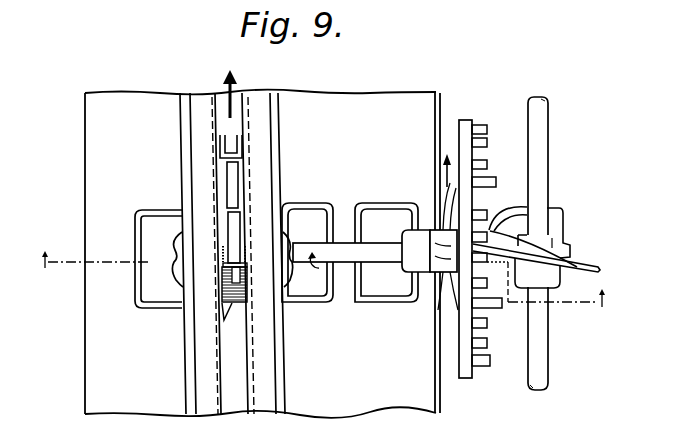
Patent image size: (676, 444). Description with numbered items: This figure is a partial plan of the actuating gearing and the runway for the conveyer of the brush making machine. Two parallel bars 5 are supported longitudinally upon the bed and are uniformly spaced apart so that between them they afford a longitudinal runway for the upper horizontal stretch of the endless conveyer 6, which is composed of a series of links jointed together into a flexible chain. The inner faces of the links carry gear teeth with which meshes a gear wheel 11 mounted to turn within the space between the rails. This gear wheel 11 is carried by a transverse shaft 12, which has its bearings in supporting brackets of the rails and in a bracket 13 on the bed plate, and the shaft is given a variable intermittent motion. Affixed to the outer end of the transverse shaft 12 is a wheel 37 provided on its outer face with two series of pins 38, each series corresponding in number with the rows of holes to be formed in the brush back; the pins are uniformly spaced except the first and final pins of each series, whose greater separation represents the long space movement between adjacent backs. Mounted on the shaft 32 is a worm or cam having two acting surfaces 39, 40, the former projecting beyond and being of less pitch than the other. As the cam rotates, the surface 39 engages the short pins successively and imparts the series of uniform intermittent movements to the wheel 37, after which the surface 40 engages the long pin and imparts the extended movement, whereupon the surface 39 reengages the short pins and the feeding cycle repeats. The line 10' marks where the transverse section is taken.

The bars 5 is at (200, 169).
The conveyer 6 is at (238, 158).
The section line 10' is at (328, 282).
The gear wheel 11 is at (227, 305).
The transverse shaft 12 is at (348, 265).
The bracket 13 is at (423, 237).
The shaft 32 is at (547, 343).
The wheel 37 is at (460, 348).
The pins 38 is at (480, 375).
The cam surface 39 is at (600, 270).
The cam surface 40 is at (505, 223).